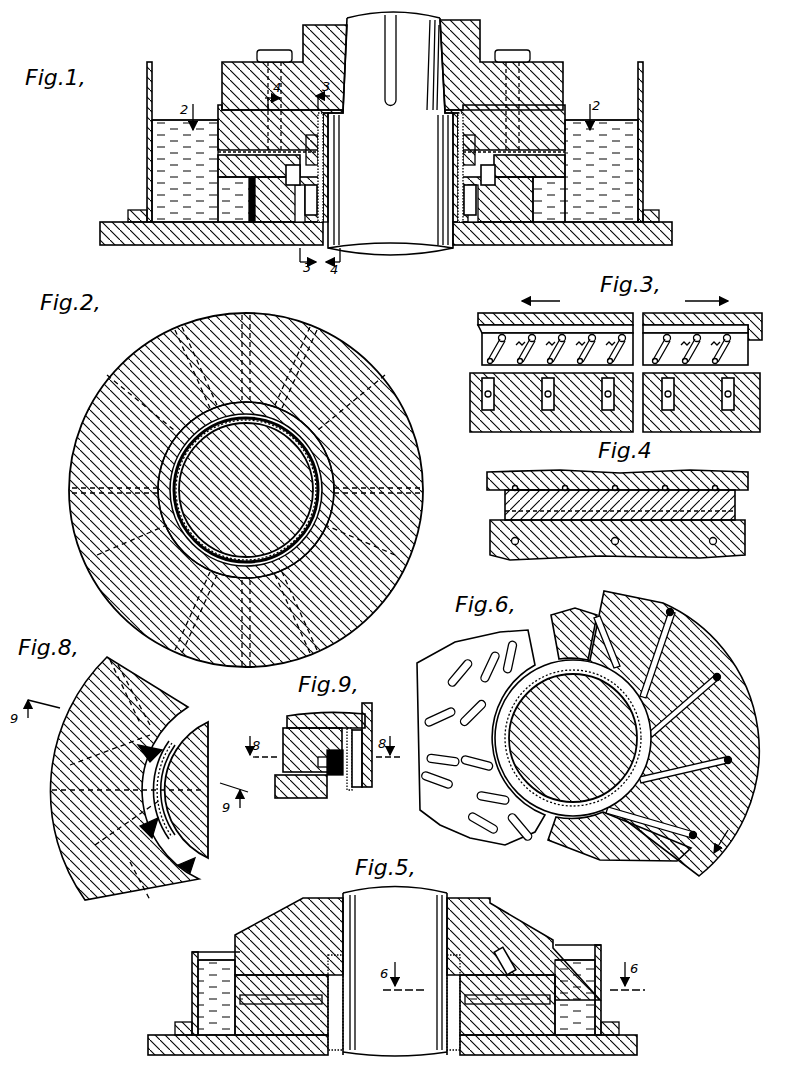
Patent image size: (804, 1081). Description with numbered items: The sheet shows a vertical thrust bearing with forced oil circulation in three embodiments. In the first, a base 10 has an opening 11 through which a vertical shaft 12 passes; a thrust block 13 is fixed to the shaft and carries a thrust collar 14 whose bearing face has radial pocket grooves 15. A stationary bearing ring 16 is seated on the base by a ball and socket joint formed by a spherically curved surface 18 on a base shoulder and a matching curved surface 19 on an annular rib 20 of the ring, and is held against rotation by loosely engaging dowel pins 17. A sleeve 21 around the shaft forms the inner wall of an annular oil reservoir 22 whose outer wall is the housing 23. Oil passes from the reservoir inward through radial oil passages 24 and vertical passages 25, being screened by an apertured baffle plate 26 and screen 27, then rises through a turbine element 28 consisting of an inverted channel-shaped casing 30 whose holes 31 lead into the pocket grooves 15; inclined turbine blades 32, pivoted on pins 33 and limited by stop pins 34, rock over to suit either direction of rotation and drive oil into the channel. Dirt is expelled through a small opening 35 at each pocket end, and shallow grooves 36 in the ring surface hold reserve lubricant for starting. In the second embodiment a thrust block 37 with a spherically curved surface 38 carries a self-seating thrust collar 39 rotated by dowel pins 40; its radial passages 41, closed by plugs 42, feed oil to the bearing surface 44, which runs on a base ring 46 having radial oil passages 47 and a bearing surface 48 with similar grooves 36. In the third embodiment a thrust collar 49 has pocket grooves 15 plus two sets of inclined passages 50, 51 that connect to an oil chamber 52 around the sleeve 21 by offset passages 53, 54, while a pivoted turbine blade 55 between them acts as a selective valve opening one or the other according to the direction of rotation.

In FIG. 1, the base 10 is at (258, 238).
In FIG. 3, the base 10 is at (500, 432).
In FIG. 4, the base 10 is at (670, 548).
In FIG. 5, the base 10 is at (276, 1050).
In FIG. 1, the opening 11 is at (332, 232).
In FIG. 1, the vertical shaft 12 is at (419, 244).
In FIG. 2, the vertical shaft 12 is at (178, 502).
In FIG. 6, the vertical shaft 12 is at (622, 743).
In FIG. 8, the vertical shaft 12 is at (205, 753).
In FIG. 9, the vertical shaft 12 is at (371, 712).
In FIG. 5, the vertical shaft 12 is at (448, 907).
In FIG. 1, the thrust block 13 is at (313, 40).
In FIG. 1, the thrust collar 14 is at (218, 112).
In FIG. 2, the thrust collar 14 is at (392, 457).
In FIG. 3, the thrust collar 14 is at (748, 318).
In FIG. 4, the thrust collar 14 is at (740, 481).
In FIG. 6, the thrust collar 14 is at (693, 652).
In FIG. 8, the thrust collar 14 is at (124, 778).
In FIG. 5, the thrust collar 14 is at (454, 1073).
In FIG. 1, the radial pocket grooves 15 is at (232, 150).
In FIG. 2, the radial pocket grooves 15 is at (387, 381).
In FIG. 8, the radial pocket grooves 15 is at (66, 835).
In FIG. 1, the stationary bearing ring 16 is at (219, 165).
In FIG. 4, the stationary bearing ring 16 is at (735, 505).
In FIG. 1, the dowel pins 17 is at (318, 174).
In FIG. 1, the spherically curved surface 18 is at (292, 208).
In FIG. 1, the curved surface 19 is at (250, 205).
In FIG. 1, the annular rib 20 is at (262, 205).
In FIG. 1, the sleeve 21 is at (335, 147).
In FIG. 2, the sleeve 21 is at (133, 421).
In FIG. 8, the sleeve 21 is at (172, 747).
In FIG. 9, the sleeve 21 is at (371, 729).
In FIG. 5, the sleeve 21 is at (330, 1002).
In FIG. 1, the annular oil reservoir 22 is at (645, 101).
In FIG. 5, the annular oil reservoir 22 is at (205, 955).
In FIG. 1, the housing 23 is at (147, 176).
In FIG. 5, the housing 23 is at (196, 977).
In FIG. 1, the radial oil passages 24 is at (300, 226).
In FIG. 3, the radial oil passages 24 is at (484, 398).
In FIG. 4, the radial oil passages 24 is at (714, 546).
In FIG. 1, the vertical passages 25 is at (322, 198).
In FIG. 3, the vertical passages 25 is at (482, 388).
In FIG. 1, the apertured baffle plate 26 is at (236, 186).
In FIG. 1, the screen 27 is at (255, 182).
In FIG. 1, the turbine element 28 is at (335, 160).
In FIG. 3, the turbine element 28 is at (478, 354).
In FIG. 1, the channel-shaped casing 30 is at (330, 137).
In FIG. 2, the channel-shaped casing 30 is at (160, 467).
In FIG. 3, the channel-shaped casing 30 is at (478, 331).
In FIG. 1, the hole 31 is at (344, 114).
In FIG. 3, the hole 31 is at (500, 332).
In FIG. 3, the turbine blades 32 is at (556, 345).
In FIG. 3, the pins 33 is at (597, 348).
In FIG. 3, the stop pins 34 is at (596, 358).
In FIG. 1, the small opening 35 is at (222, 151).
In FIG. 2, the small opening 35 is at (322, 333).
In FIG. 4, the shallow grooves 36 is at (540, 492).
In FIG. 6, the shallow grooves 36 is at (446, 775).
In FIG. 5, the thrust block 37 is at (485, 925).
In FIG. 5, the spherically curved surface 38 is at (522, 933).
In FIG. 5, the thrust collar 39 is at (565, 963).
In FIG. 5, the dowel pins 40 is at (522, 950).
In FIG. 6, the radial passages 41 is at (696, 698).
In FIG. 5, the radial passages 41 is at (452, 970).
In FIG. 6, the plugs 42 is at (721, 678).
In FIG. 5, the bearing surface 44 is at (601, 962).
In FIG. 5, the base ring 46 is at (556, 1030).
In FIG. 5, the radial oil passages 47 is at (545, 1040).
In FIG. 5, the bearing surface 48 is at (580, 999).
In FIG. 8, the thrust collar 49 is at (60, 803).
In FIG. 9, the thrust collar 49 is at (328, 717).
In FIG. 8, the inclined passages 50 is at (62, 865).
In FIG. 8, the inclined passages 51 is at (110, 752).
In FIG. 9, the oil chamber 52 is at (354, 790).
In FIG. 9, the passage 53 is at (330, 777).
In FIG. 8, the passage 54 is at (150, 748).
In FIG. 9, the passage 54 is at (328, 773).
In FIG. 8, the turbine blade 55 is at (162, 744).
In FIG. 9, the turbine blade 55 is at (338, 777).